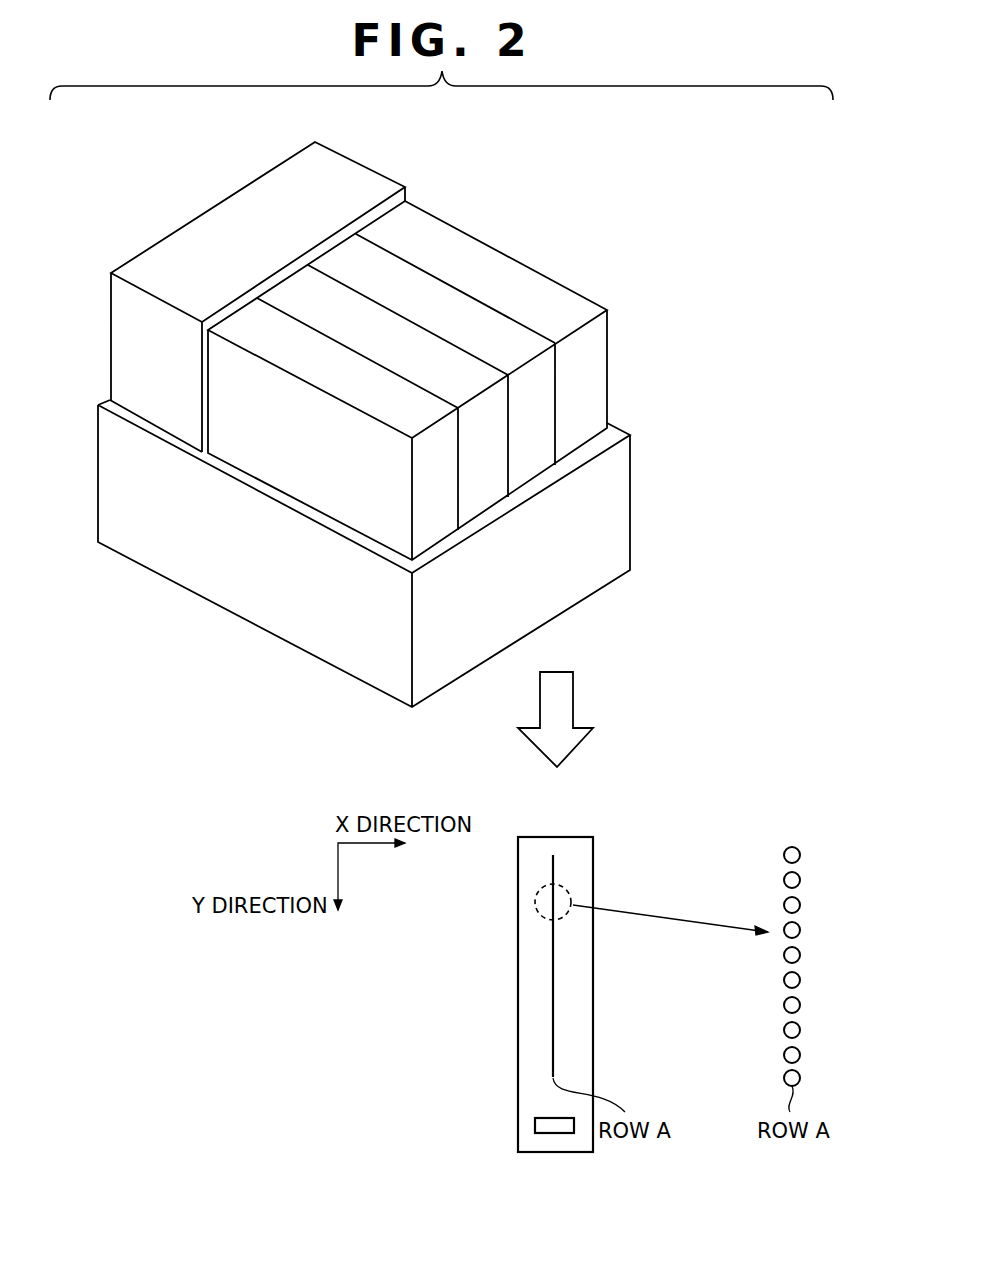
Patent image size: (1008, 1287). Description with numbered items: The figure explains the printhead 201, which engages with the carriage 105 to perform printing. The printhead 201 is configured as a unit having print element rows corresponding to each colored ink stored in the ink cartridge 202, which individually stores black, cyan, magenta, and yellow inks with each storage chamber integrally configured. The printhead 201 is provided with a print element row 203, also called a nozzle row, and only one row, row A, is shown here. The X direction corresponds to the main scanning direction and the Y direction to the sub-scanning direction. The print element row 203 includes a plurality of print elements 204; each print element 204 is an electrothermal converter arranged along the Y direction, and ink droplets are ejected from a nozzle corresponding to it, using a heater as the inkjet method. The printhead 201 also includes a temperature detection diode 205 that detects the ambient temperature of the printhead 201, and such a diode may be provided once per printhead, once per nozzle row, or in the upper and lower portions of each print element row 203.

The carriage 105 is at (623, 497).
The printhead 201 is at (230, 218).
The ink cartridge 202 is at (611, 357).
The print element row 203 is at (555, 1030).
The print element 204 is at (792, 847).
The temperature detection diode 205 is at (535, 1125).